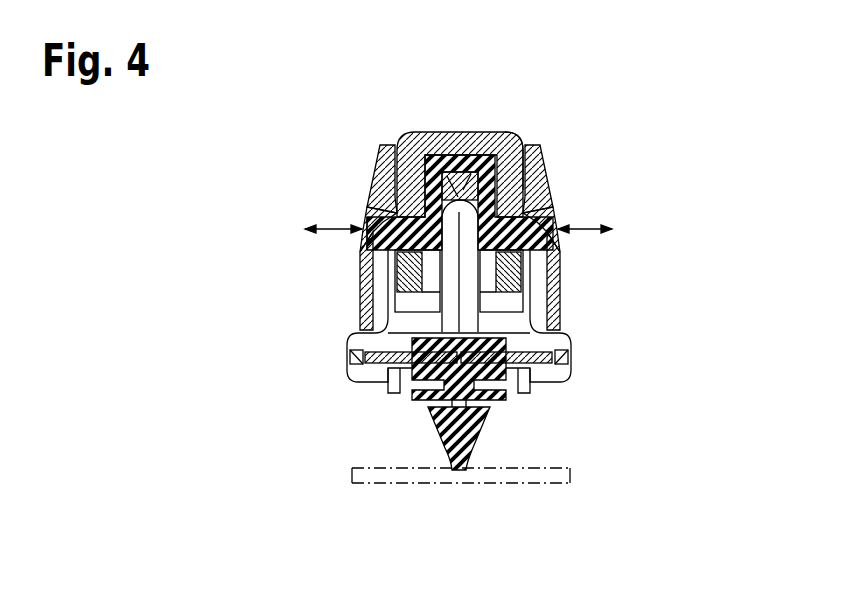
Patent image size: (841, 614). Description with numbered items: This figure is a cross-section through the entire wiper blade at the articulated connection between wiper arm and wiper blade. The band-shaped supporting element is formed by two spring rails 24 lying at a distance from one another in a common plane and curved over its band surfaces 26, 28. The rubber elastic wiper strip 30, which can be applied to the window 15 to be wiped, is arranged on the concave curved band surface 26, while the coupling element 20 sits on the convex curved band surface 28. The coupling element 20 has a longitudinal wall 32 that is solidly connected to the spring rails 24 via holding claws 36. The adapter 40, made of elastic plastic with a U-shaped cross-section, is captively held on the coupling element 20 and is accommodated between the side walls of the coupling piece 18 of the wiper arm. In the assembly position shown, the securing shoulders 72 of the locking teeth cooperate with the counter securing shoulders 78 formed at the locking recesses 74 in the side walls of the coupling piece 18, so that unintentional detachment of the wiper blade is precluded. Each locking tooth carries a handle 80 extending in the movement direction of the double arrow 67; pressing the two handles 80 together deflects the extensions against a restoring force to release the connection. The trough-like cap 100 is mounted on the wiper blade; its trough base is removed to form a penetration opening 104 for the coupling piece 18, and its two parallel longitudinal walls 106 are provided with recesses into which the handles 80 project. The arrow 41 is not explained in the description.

The window 15 is at (420, 483).
The coupling piece 18 is at (479, 120).
The coupling element 20 is at (413, 128).
The spring rails 24 is at (393, 388).
The concave curved band surface 26 is at (557, 374).
The convex curved band surface 28 is at (572, 353).
The wiper strip 30 is at (513, 412).
The longitudinal wall 32 is at (449, 180).
The holding claws 36 is at (355, 360).
The adapter 40 is at (501, 142).
The arrow / fastening direction 41 is at (384, 462).
The double arrow 67 is at (333, 228).
The securing shoulder 72 is at (365, 254).
The locking recess 74 is at (378, 220).
The counter securing shoulder 78 is at (365, 300).
The handle 80 is at (364, 221).
The cap 100 is at (354, 257).
The penetration opening 104 is at (533, 136).
The longitudinal walls 106 is at (557, 286).